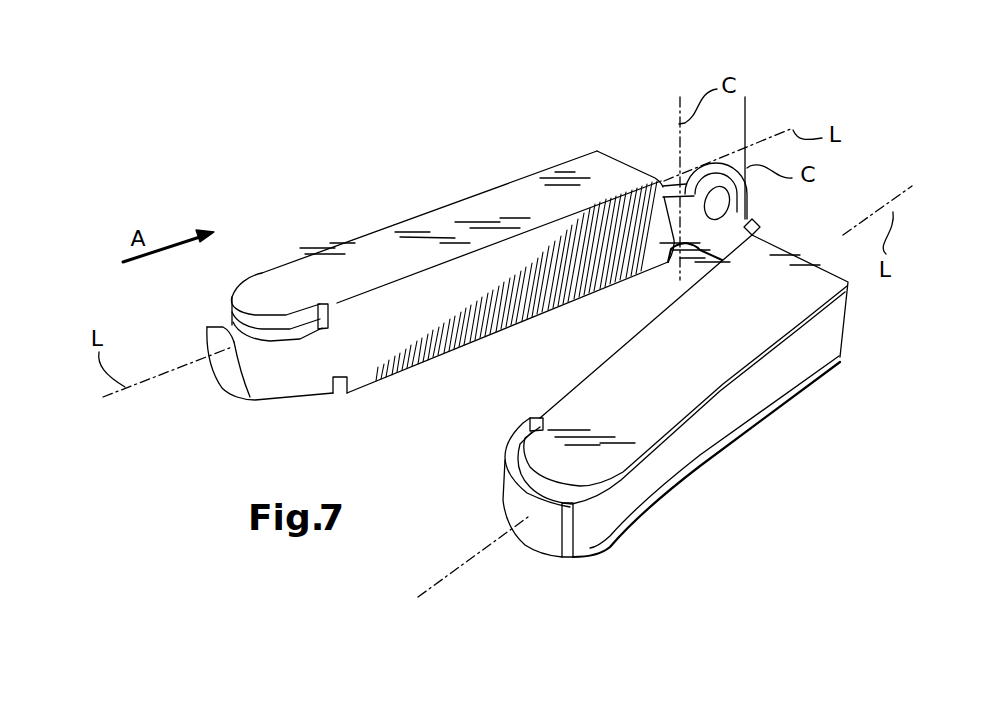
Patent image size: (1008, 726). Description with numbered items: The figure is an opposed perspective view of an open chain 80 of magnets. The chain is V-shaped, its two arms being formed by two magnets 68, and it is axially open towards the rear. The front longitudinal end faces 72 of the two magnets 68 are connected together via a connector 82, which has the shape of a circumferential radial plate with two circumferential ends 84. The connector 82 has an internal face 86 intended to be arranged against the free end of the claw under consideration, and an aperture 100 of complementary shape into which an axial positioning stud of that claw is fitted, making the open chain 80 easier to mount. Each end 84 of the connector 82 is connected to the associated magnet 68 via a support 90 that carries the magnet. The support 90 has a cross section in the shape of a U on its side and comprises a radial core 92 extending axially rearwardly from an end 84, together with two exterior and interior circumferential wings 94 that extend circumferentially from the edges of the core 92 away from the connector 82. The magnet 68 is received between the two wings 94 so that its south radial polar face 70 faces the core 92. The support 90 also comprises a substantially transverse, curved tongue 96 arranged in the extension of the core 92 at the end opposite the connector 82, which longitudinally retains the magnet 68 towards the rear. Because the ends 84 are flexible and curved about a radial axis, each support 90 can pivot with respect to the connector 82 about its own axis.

The open chain 80 is at (607, 78).
The support 90 is at (505, 209).
The radial core 92 is at (392, 323).
The south radial polar face 70 is at (757, 392).
The circumferential wings 94 is at (380, 266).
The magnet 68 is at (218, 309).
The front longitudinal end face 72 is at (257, 332).
The tongue 96 is at (213, 368).
The circumferential end 84 is at (672, 186).
The aperture 100 is at (707, 188).
The connector 82 is at (762, 223).
The internal face 86 is at (718, 240).